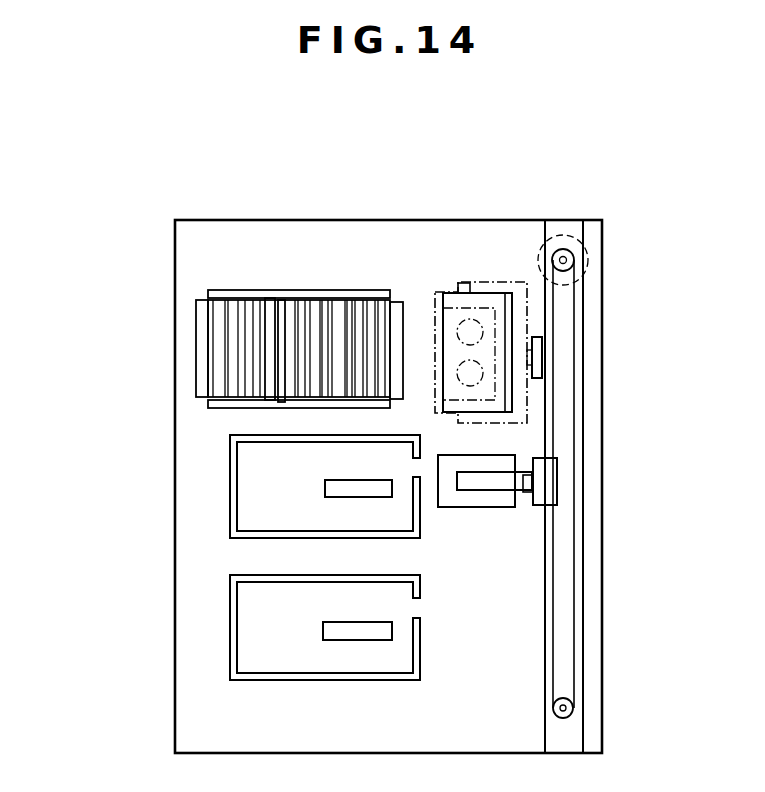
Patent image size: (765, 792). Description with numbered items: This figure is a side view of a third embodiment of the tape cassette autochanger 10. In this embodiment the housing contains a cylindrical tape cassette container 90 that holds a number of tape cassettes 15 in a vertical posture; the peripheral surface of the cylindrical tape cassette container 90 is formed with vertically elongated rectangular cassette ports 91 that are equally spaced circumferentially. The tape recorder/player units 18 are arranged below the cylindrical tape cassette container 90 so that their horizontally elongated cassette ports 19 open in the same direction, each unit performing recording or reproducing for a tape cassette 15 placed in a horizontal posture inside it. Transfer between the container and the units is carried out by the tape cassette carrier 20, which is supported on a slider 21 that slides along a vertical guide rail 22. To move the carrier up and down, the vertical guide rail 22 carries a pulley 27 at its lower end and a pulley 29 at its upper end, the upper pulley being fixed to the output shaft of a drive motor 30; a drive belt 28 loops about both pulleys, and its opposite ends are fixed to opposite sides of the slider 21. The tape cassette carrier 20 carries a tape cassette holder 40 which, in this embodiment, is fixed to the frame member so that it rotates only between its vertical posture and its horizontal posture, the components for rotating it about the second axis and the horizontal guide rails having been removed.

The tape cassette autochanger 10 is at (599, 215).
The tape cassette 15 is at (365, 497).
The tape recorder/player unit 18 is at (248, 490).
The cassette port 19 is at (415, 460).
The tape cassette carrier 20 is at (441, 270).
The slider 21 is at (550, 478).
The vertical guide rail 22 is at (560, 612).
The pulley 27 is at (570, 716).
The drive belt 28 is at (578, 537).
The pulley 29 is at (562, 250).
The drive motor 30 is at (602, 262).
The tape cassette holder 40 is at (466, 291).
The cylindrical tape cassette container 90 is at (182, 369).
The cassette port 91 is at (338, 310).